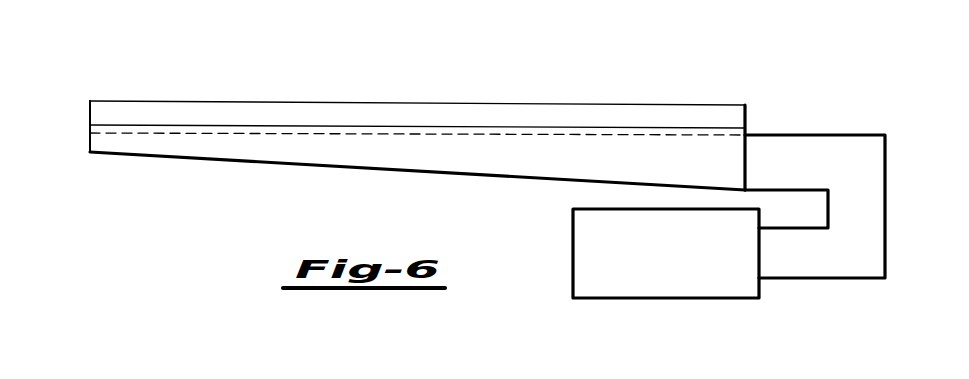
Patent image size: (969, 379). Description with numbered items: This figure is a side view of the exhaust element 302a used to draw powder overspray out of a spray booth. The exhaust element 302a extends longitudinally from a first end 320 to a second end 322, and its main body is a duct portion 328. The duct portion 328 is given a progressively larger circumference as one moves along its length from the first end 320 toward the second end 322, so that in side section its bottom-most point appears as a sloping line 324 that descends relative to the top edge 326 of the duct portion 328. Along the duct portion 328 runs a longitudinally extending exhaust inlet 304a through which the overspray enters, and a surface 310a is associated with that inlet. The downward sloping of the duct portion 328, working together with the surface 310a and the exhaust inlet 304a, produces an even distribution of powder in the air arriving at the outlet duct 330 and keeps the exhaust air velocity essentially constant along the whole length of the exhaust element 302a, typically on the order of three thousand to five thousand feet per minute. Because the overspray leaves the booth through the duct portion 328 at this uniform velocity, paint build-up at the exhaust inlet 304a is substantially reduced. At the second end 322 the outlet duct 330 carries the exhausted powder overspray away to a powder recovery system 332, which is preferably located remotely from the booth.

The exhaust element 302a is at (91, 99).
The exhaust inlet 304a is at (408, 133).
The surface 310a is at (547, 123).
The first end 320 is at (90, 115).
The second end 322 is at (747, 115).
The sloping line 324 is at (252, 161).
The top edge 326 is at (303, 127).
The duct portion 328 is at (462, 153).
The outlet duct 330 is at (860, 279).
The powder recovery system 332 is at (643, 280).